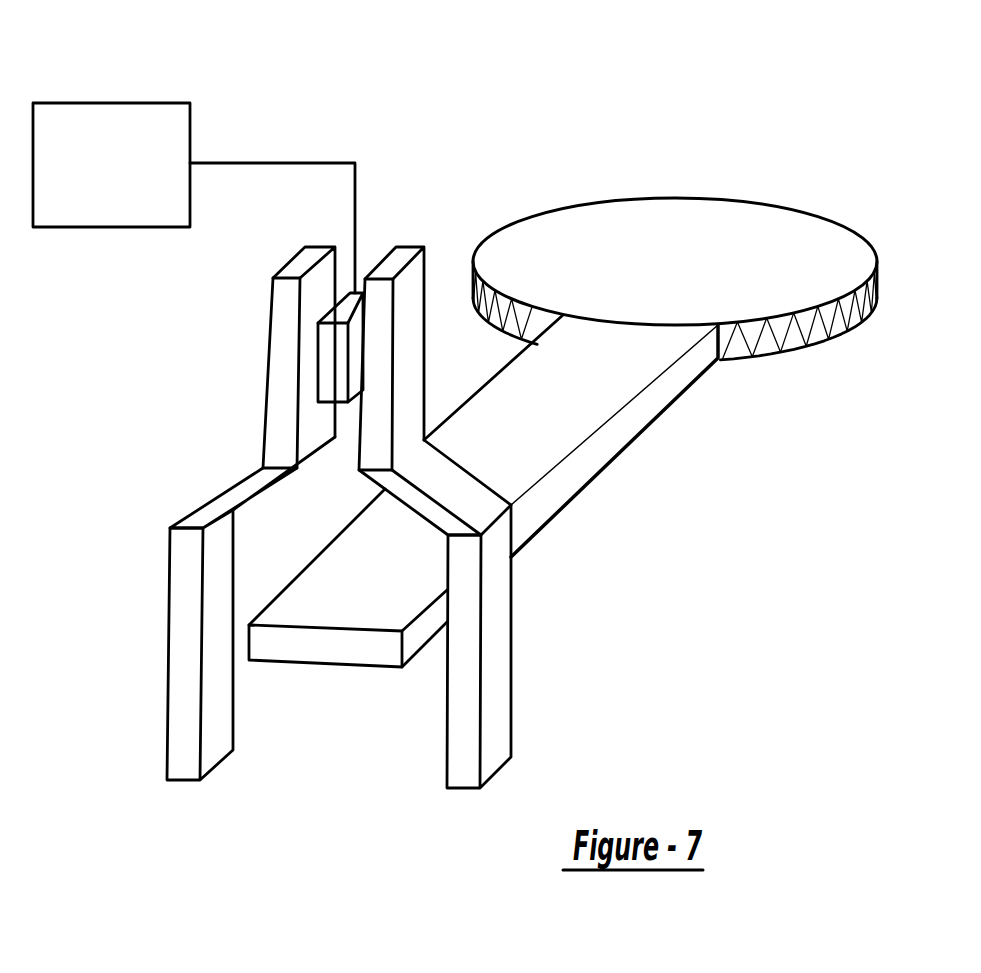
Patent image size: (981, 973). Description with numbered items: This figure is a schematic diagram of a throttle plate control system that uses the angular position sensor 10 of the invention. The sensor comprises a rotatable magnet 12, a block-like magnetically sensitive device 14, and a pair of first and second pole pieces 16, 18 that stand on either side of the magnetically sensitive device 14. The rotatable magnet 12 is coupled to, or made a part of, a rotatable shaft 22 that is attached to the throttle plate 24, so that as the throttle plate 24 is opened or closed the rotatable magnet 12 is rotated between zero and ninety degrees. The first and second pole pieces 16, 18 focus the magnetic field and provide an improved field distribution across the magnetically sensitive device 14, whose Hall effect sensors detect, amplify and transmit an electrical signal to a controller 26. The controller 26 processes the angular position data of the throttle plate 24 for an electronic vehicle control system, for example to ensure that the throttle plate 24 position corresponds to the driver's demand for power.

The angular position sensor 10 is at (125, 411).
The rotatable magnet 12 is at (332, 647).
The magnetically sensitive device 14 is at (328, 345).
The first pole piece 16 is at (490, 647).
The second pole piece 18 is at (170, 570).
The rotatable shaft 22 is at (632, 443).
The throttle plate 24 is at (807, 345).
The controller 26 is at (163, 102).